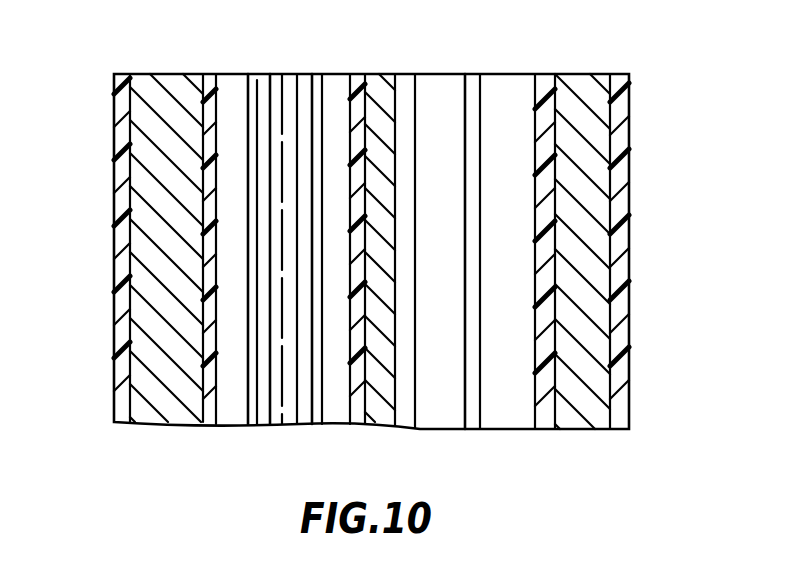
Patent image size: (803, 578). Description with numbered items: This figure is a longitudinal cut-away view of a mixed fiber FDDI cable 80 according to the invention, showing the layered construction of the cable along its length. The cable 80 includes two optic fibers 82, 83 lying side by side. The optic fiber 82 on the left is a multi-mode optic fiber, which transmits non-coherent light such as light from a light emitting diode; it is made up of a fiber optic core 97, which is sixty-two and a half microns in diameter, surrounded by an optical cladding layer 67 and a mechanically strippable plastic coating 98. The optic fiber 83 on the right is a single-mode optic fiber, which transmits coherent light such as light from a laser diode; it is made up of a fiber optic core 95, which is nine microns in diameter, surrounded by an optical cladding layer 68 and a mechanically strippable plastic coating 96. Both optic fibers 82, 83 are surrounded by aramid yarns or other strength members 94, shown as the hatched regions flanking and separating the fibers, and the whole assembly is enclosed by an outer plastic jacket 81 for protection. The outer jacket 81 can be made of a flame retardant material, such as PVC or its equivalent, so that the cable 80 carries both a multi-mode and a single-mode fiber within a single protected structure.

The mixed fiber cable 80 is at (631, 110).
The outer plastic jacket 81 is at (620, 240).
The optic fiber 82 is at (282, 242).
The optic fiber 83 is at (503, 243).
The optical cladding layer 67 is at (228, 92).
The optical cladding layer 68 is at (563, 232).
The strength members 94 is at (138, 275).
The fiber optic core 95 is at (476, 420).
The mechanically strippable plastic coating 96 is at (538, 410).
The fiber optic core 97 is at (300, 408).
The mechanically strippable plastic coating 98 is at (205, 412).